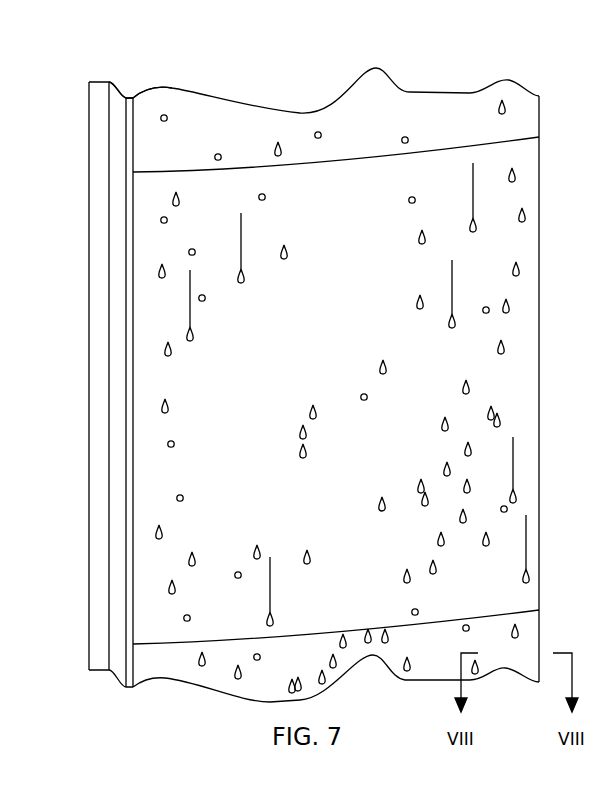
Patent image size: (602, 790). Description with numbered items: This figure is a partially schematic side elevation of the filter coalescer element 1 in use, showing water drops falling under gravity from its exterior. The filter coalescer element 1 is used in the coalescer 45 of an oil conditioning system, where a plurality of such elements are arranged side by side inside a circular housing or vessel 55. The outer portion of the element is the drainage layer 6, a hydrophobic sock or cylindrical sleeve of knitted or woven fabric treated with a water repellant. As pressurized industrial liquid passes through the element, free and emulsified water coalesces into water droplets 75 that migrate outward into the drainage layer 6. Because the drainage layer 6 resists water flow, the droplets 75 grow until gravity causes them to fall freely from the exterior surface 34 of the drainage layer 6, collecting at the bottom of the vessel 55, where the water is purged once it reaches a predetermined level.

The filter coalescer element 1 is at (533, 72).
The coalescer 45 is at (119, 76).
The vessel 55 is at (97, 300).
The drainage layer 6 is at (295, 341).
The exterior surface 34 is at (523, 176).
The water droplets 75 is at (276, 146).